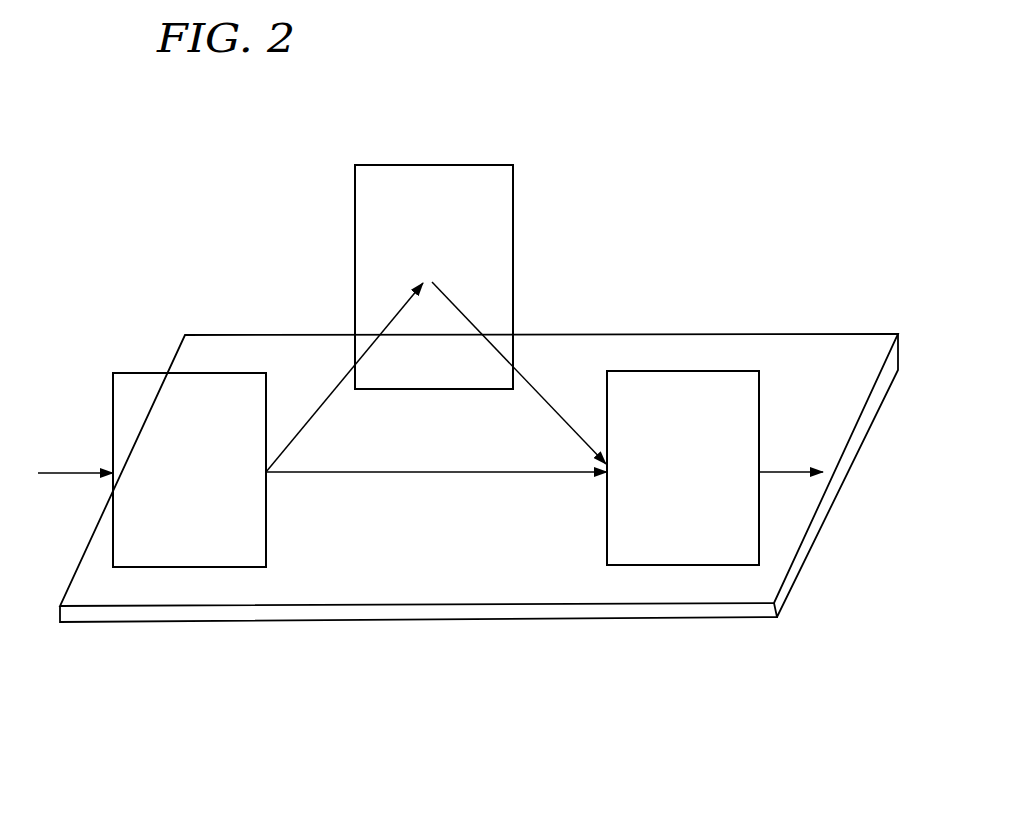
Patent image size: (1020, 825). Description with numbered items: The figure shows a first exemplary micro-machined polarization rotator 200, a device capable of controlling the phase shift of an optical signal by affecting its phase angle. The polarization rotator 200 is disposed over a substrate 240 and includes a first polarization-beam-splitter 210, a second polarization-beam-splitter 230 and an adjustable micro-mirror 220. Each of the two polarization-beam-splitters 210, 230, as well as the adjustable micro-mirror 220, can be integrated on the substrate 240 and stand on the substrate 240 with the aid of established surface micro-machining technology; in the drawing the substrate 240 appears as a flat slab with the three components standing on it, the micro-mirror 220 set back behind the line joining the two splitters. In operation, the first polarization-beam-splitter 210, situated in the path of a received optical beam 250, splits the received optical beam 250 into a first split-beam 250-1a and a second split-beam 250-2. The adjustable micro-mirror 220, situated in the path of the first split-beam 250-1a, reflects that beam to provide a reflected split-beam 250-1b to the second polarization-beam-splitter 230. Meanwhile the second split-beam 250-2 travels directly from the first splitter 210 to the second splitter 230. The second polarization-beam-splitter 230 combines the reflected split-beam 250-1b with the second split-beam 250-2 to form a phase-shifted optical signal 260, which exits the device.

The micro-machined polarization rotator 200 is at (633, 136).
The first polarization-beam-splitter 210 is at (183, 569).
The adjustable micro-mirror 220 is at (513, 182).
The second polarization-beam-splitter 230 is at (683, 567).
The substrate 240 is at (433, 612).
The received optical beam 250 is at (73, 476).
The first split-beam 250-1a is at (310, 427).
The reflected split-beam 250-1b is at (560, 426).
The second split-beam 250-2 is at (418, 474).
The phase-shifted optical signal 260 is at (770, 475).